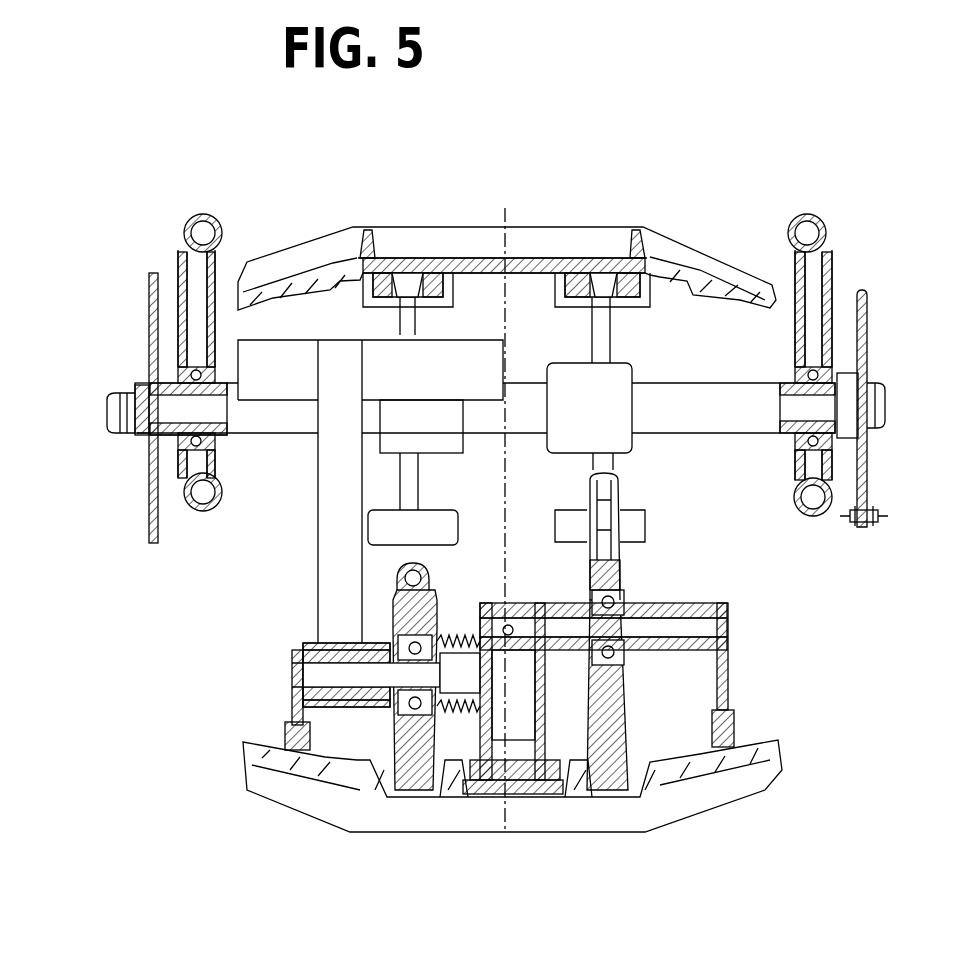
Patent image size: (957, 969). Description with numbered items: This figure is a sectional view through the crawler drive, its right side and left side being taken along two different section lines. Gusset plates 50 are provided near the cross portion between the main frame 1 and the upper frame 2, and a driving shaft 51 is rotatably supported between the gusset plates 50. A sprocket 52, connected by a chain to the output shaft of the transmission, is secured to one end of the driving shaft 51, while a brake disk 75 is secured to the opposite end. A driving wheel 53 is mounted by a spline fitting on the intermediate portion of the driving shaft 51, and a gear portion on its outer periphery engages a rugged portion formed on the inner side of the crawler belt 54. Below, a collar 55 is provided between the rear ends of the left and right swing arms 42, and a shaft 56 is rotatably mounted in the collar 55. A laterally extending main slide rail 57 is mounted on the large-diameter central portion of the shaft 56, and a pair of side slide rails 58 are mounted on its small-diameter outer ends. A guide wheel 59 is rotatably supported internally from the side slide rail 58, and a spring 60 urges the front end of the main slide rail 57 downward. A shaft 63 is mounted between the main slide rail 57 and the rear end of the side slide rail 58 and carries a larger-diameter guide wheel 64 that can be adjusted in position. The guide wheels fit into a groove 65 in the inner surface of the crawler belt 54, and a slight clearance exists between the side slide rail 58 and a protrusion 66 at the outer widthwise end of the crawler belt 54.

The main frame 1 is at (203, 513).
The upper frame 2 is at (195, 218).
The swing arm 42 is at (322, 498).
The gusset plate 50 is at (180, 268).
The driving shaft 51 is at (700, 395).
The sprocket 52 is at (866, 322).
The driving wheel 53 is at (410, 290).
The crawler belt 54 is at (530, 240).
The collar 55 is at (325, 645).
The shaft 56 is at (298, 675).
The main slide rail 57 is at (527, 770).
The side slide rail 58 is at (292, 713).
The guide wheel 59 is at (426, 583).
The spring 60 is at (447, 712).
The shaft 63 is at (720, 625).
The guide wheel 64 is at (627, 577).
The groove 65 is at (410, 790).
The protrusion 66 is at (738, 752).
The brake disk 75 is at (152, 520).